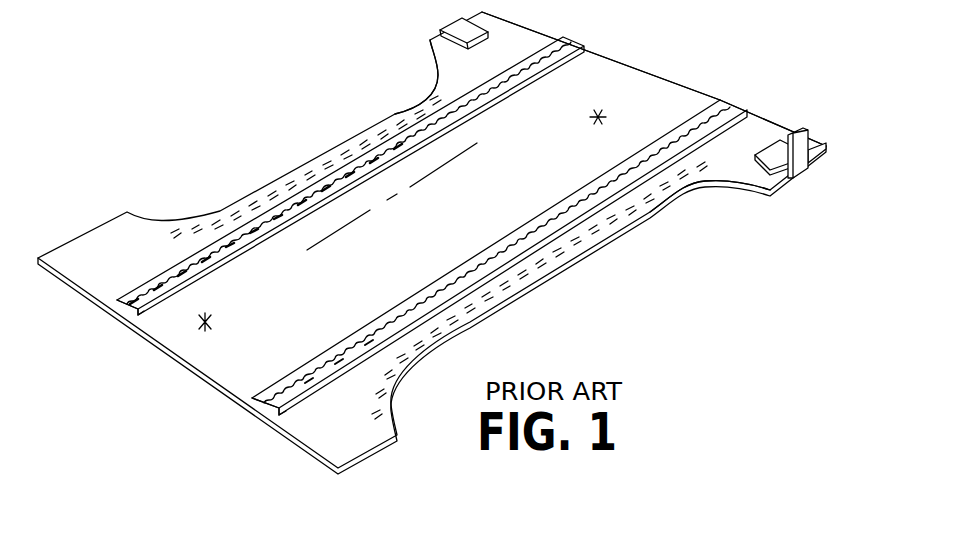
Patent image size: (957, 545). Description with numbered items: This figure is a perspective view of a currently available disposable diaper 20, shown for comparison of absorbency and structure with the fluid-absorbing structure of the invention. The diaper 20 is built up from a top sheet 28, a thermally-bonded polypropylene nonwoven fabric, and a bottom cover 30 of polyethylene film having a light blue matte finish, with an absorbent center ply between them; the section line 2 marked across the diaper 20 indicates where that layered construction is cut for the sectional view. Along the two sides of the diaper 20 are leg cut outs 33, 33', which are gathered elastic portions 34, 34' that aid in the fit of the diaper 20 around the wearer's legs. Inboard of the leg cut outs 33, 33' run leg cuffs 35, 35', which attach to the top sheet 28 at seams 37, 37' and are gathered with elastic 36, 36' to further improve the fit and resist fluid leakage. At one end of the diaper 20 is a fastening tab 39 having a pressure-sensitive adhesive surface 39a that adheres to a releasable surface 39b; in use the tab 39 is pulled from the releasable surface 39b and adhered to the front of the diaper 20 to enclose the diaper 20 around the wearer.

The section line 2- 2 is at (450, 140).
The disposable diaper 20 is at (705, 268).
The top sheet 28 is at (673, 107).
The bottom cover 30 is at (380, 453).
The leg cut out 33 is at (499, 257).
The leg cut out 33' is at (350, 176).
The gathered elastic portion 34 is at (571, 290).
The gathered elastic portion 34' is at (306, 122).
The leg cuff 35 is at (245, 422).
The leg cuff 35' is at (100, 321).
The elastic 36 is at (497, 255).
The elastic 36' is at (349, 173).
The seam 37 is at (339, 385).
The seam 37' is at (248, 224).
The tab 39 is at (476, 31).
The pressure-sensitive adhesive surface 39a is at (807, 127).
The releasable surface 39b is at (773, 147).